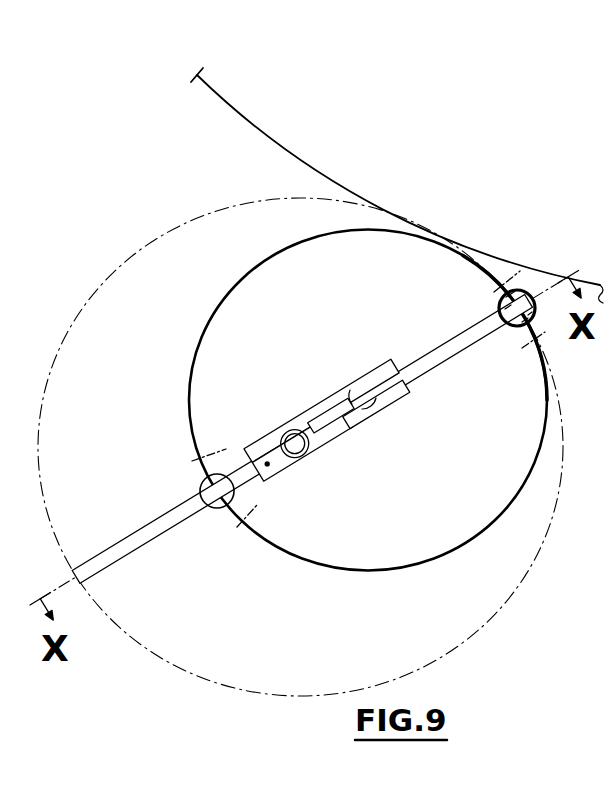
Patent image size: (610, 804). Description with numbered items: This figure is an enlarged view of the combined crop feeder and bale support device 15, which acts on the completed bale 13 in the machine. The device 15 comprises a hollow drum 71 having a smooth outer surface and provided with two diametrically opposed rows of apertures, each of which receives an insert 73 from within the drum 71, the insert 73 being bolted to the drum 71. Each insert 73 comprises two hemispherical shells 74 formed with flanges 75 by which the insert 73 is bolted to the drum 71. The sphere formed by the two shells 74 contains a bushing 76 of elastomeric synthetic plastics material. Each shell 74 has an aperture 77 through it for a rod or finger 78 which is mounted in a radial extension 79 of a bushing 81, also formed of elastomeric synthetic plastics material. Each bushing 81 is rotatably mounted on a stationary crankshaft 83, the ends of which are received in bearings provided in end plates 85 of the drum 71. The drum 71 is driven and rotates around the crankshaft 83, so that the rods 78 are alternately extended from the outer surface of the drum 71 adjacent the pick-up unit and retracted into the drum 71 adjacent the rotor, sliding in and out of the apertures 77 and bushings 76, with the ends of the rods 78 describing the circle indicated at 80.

The completed bale 13 is at (410, 162).
The combined crop feeder and bale support device 15 is at (196, 276).
The hollow drum 71 is at (433, 560).
The insert 73 is at (262, 496).
The hemispherical shell 74 is at (222, 470).
The flange 75 is at (203, 446).
The bushing 76 is at (538, 328).
The aperture 77 is at (490, 334).
The rod or finger 78 is at (140, 535).
The radial extension 79 is at (340, 433).
The circle 80 is at (72, 338).
The bushing 81 is at (317, 449).
The stationary crankshaft 83 is at (401, 398).
The end plate 85 is at (447, 511).